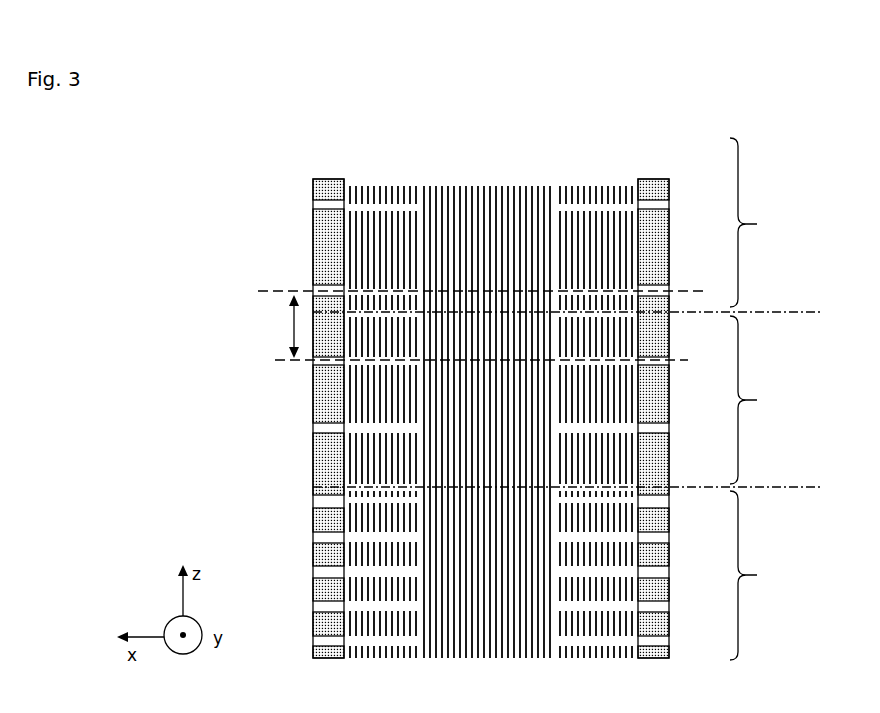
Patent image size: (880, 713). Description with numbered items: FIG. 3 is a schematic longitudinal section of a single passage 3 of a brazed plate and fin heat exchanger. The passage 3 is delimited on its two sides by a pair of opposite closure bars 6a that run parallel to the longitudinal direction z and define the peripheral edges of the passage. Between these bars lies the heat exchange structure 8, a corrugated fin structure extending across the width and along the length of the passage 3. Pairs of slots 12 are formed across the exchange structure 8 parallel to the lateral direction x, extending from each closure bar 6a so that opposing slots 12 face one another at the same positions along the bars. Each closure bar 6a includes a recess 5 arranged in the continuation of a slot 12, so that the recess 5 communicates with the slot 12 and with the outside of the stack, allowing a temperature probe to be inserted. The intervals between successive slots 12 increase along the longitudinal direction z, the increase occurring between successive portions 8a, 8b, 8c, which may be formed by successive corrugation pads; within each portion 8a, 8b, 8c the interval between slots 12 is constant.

The passage 3 is at (521, 414).
The recess 5 is at (288, 444).
The closure bar 6a is at (300, 238).
The heat exchange structure 8 is at (474, 208).
The first portion 8a is at (568, 573).
The second portion 8b is at (568, 398).
The third portion 8c is at (760, 222).
The slot 12 is at (398, 650).